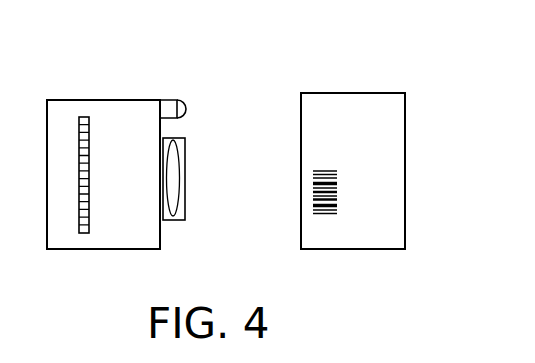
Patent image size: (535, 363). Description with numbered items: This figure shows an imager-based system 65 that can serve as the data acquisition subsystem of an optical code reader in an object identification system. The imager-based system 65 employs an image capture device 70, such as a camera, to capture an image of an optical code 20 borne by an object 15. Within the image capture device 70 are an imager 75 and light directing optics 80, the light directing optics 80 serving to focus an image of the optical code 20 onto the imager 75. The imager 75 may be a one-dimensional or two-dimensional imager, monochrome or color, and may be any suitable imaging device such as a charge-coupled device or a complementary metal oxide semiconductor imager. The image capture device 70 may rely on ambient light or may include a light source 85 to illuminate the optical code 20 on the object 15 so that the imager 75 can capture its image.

The imager-based system 65 is at (164, 70).
The image capture device 70 is at (133, 249).
The imager 75 is at (79, 181).
The light directing optics 80 is at (176, 209).
The light source 85 is at (178, 100).
The object 15 is at (368, 153).
The optical code 20 is at (337, 206).